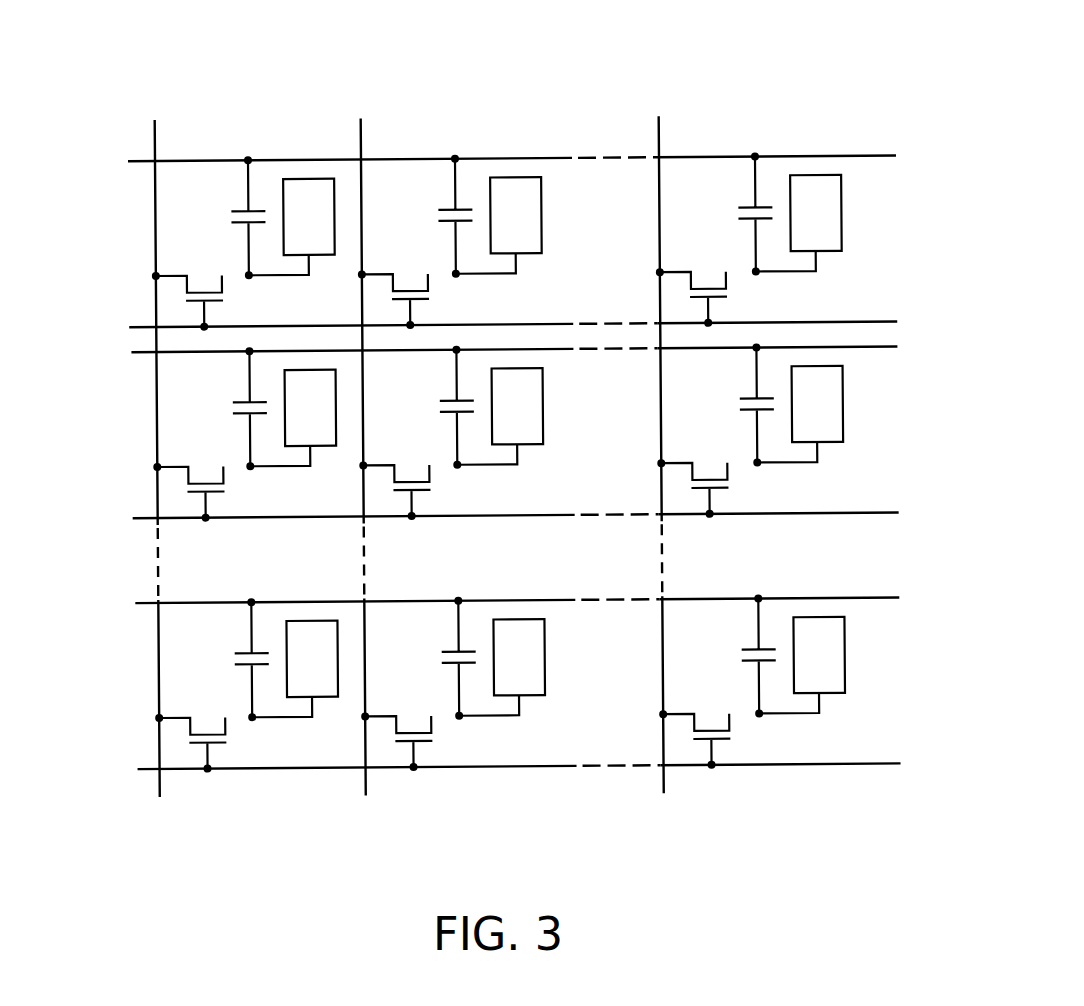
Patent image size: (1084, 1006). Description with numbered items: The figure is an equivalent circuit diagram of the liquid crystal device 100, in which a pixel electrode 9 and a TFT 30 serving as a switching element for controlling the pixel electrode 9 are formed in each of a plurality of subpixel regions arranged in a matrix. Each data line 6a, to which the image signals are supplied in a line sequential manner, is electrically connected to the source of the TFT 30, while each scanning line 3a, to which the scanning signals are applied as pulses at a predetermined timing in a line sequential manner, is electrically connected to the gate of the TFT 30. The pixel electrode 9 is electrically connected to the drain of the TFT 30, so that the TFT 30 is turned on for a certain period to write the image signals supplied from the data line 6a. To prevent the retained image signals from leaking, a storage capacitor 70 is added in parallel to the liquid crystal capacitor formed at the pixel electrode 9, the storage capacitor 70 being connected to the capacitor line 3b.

The liquid crystal device 100 is at (885, 116).
The scanning line 3a is at (139, 325).
The capacitor line 3b is at (140, 160).
The data line 6a is at (158, 143).
The pixel electrode 9 is at (313, 257).
The TFT 30 is at (234, 300).
The storage capacitor 70 is at (220, 218).